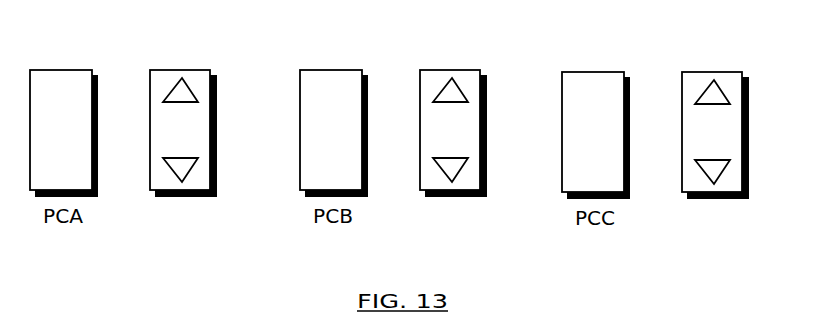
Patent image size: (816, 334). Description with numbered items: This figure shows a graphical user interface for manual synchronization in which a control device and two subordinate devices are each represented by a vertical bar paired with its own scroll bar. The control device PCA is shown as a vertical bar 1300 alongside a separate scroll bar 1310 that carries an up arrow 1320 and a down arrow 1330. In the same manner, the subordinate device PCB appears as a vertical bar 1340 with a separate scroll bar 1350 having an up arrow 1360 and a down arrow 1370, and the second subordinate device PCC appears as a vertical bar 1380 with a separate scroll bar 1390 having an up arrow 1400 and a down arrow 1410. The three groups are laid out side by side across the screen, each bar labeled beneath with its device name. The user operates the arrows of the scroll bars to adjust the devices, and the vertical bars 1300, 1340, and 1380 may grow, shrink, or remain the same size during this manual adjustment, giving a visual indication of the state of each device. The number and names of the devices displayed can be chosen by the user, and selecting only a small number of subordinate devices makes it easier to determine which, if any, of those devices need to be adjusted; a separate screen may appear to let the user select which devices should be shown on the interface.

The vertical bar 1300 is at (66, 69).
The scroll bar 1310 is at (183, 69).
The up arrow 1320 is at (193, 90).
The down arrow 1330 is at (167, 168).
The vertical bar 1340 is at (336, 69).
The scroll bar 1350 is at (453, 69).
The up arrow 1360 is at (463, 90).
The down arrow 1370 is at (437, 168).
The vertical bar 1380 is at (598, 71).
The scroll bar 1390 is at (715, 71).
The up arrow 1400 is at (725, 92).
The down arrow 1410 is at (699, 170).